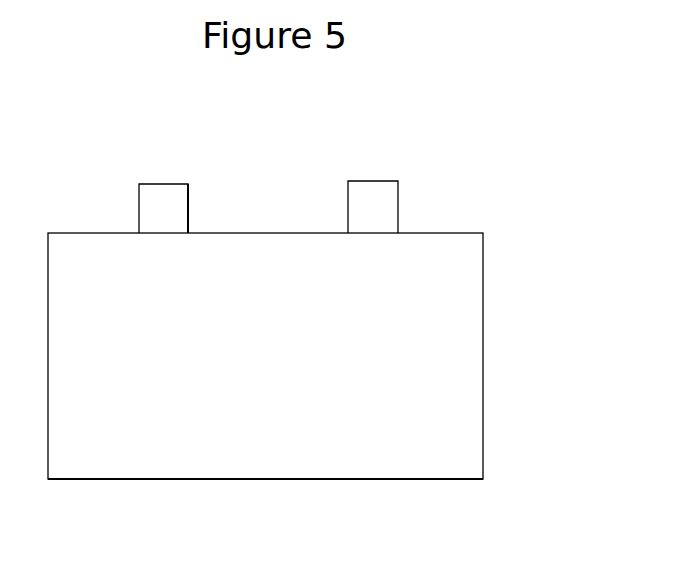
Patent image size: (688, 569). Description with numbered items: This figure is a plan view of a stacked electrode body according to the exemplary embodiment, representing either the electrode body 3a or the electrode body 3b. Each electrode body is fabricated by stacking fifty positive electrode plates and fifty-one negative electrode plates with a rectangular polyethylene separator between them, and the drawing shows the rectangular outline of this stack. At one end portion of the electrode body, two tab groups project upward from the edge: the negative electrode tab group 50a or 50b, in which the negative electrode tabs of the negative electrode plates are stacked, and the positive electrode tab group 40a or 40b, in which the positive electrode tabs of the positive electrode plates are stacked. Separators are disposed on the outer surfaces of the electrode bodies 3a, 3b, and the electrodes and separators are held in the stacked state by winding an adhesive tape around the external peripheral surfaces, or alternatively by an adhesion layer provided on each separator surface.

The electrode body 3a is at (265, 276).
The electrode body 3b is at (132, 102).
The negative electrode tab group 50a is at (253, 177).
The negative electrode tab group 50b is at (158, 205).
The positive electrode tab group 40a is at (464, 186).
The positive electrode tab group 40b is at (375, 218).